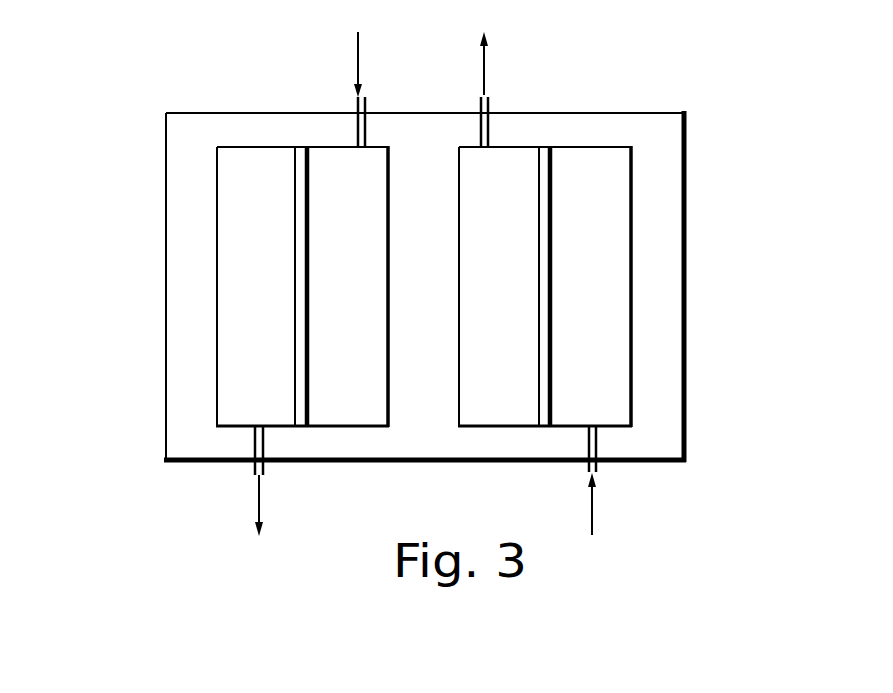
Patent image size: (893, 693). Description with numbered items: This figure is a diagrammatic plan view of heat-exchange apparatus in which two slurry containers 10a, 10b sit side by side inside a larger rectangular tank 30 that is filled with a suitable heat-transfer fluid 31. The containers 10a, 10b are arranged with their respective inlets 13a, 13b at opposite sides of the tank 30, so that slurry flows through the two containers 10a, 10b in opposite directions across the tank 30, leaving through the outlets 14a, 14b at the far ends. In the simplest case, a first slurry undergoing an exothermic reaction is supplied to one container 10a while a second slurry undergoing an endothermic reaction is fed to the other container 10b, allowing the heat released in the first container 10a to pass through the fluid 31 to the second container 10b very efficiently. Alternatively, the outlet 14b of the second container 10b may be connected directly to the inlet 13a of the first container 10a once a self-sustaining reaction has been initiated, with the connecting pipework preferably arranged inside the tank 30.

The first container 10a is at (217, 318).
The second container 10b is at (631, 403).
The inlet of first container 13a is at (356, 146).
The inlet of second container 13b is at (598, 430).
The outlet of first container 14a is at (247, 430).
The outlet of second container 14b is at (490, 146).
The rectangular tank 30 is at (687, 285).
The heat-transfer fluid 31 is at (663, 365).